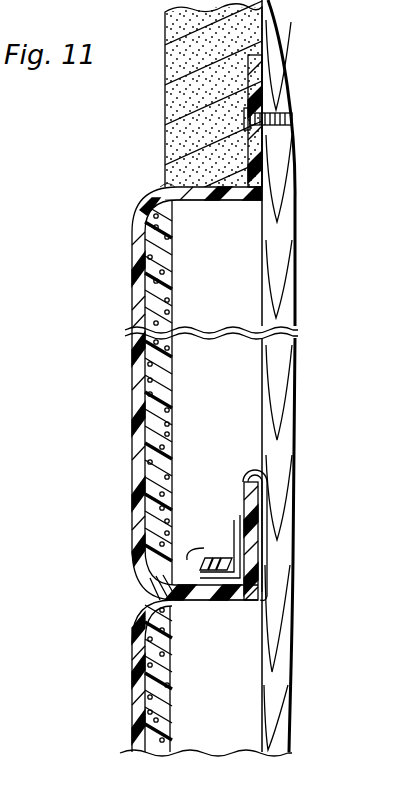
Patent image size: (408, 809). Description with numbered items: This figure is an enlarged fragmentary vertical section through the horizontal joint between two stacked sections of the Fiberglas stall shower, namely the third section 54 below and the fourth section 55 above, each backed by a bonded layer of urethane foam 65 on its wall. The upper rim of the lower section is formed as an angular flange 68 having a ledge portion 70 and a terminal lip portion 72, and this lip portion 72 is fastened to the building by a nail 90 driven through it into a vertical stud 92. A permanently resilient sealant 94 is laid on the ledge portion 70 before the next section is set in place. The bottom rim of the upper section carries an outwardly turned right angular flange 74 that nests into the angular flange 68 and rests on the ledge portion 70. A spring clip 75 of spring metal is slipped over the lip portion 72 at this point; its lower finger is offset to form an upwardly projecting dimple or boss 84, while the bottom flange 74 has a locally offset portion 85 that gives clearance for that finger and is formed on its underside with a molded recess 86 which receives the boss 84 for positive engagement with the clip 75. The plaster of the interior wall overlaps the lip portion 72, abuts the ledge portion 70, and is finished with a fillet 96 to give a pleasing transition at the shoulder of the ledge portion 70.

The third section 54 is at (128, 681).
The fourth section 55 is at (131, 403).
The layer of urethane foam 65 is at (172, 403).
The angular flange 68 is at (245, 206).
The ledge portion 70 is at (200, 201).
The lip portion 72 is at (200, 92).
The right angular flange 74 is at (225, 580).
The spring clip 75 is at (252, 468).
The dimple or boss 84 is at (216, 602).
The offset portion 85 is at (214, 557).
The recess 86 is at (190, 556).
The nail 90 is at (272, 128).
The stud 92 is at (260, 286).
The sealant 94 is at (150, 580).
The fillet 96 is at (166, 185).